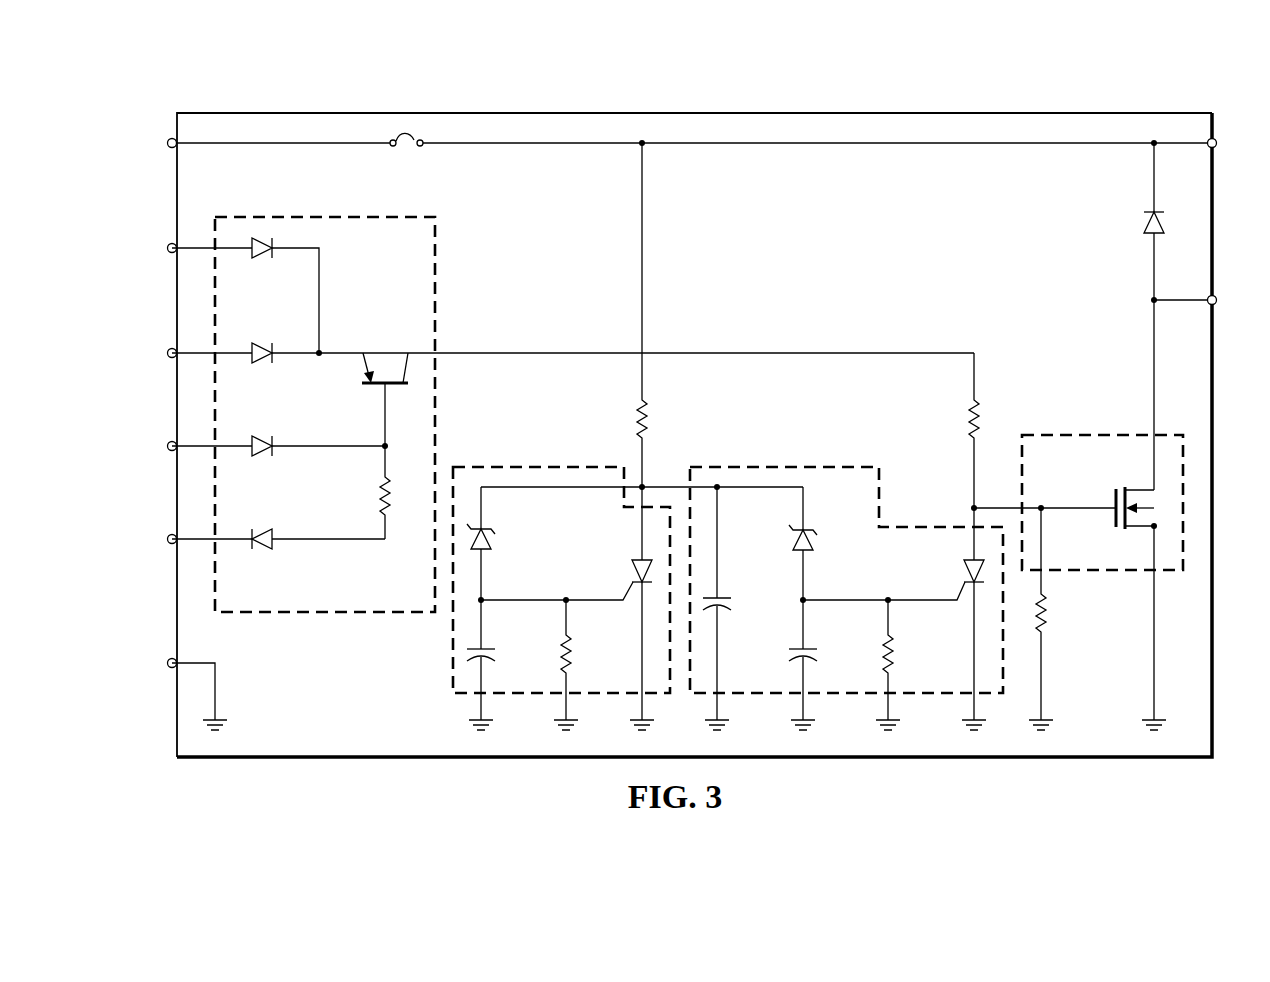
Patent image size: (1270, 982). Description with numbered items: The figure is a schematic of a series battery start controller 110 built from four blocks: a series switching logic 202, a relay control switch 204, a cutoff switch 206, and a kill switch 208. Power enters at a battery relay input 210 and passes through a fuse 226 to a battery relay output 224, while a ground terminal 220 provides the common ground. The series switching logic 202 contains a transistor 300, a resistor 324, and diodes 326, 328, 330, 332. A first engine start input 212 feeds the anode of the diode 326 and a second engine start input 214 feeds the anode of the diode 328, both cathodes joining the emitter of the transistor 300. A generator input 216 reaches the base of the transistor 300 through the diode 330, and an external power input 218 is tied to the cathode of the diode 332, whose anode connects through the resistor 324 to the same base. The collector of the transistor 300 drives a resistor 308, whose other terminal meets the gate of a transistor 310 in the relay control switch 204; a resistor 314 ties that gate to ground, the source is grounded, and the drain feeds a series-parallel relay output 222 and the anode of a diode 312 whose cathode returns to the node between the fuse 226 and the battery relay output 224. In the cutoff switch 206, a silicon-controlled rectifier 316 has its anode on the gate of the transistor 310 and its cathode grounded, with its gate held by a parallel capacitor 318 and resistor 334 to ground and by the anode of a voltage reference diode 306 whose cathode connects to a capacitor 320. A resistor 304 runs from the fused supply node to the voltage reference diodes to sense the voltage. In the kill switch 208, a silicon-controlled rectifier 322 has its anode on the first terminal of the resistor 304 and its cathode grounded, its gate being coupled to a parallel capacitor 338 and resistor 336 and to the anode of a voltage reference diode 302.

The battery start controller 110 is at (544, 90).
The series switching logic 202 is at (310, 210).
The relay control switch 204 is at (1088, 428).
The cutoff switch 206 is at (783, 458).
The kill switch 208 is at (523, 458).
The battery relay input 210 is at (167, 140).
The first engine start input 212 is at (167, 245).
The second engine start input 214 is at (167, 350).
The generator input 216 is at (167, 443).
The external power input 218 is at (167, 542).
The ground terminal 220 is at (167, 666).
The series-parallel relay output 222 is at (1218, 297).
The battery relay output 224 is at (1218, 140).
The fuse 226 is at (416, 150).
The transistor 300 is at (376, 386).
The voltage reference diode 302 is at (492, 540).
The resistor 304 is at (636, 416).
The voltage reference diode 306 is at (814, 540).
The resistor 308 is at (968, 424).
The transistor 310 is at (1113, 495).
The diode 312 is at (1144, 218).
The resistor 314 is at (1050, 614).
The silicon-controlled rectifier 316 is at (962, 570).
The capacitor 318 is at (818, 655).
The capacitor 320 is at (734, 604).
The silicon-controlled rectifier 322 is at (632, 570).
The resistor 324 is at (376, 496).
The diode 326 is at (266, 258).
The diode 328 is at (266, 363).
The diode 330 is at (266, 456).
The diode 332 is at (250, 549).
The resistor 334 is at (898, 655).
The resistor 336 is at (576, 655).
The capacitor 338 is at (496, 655).